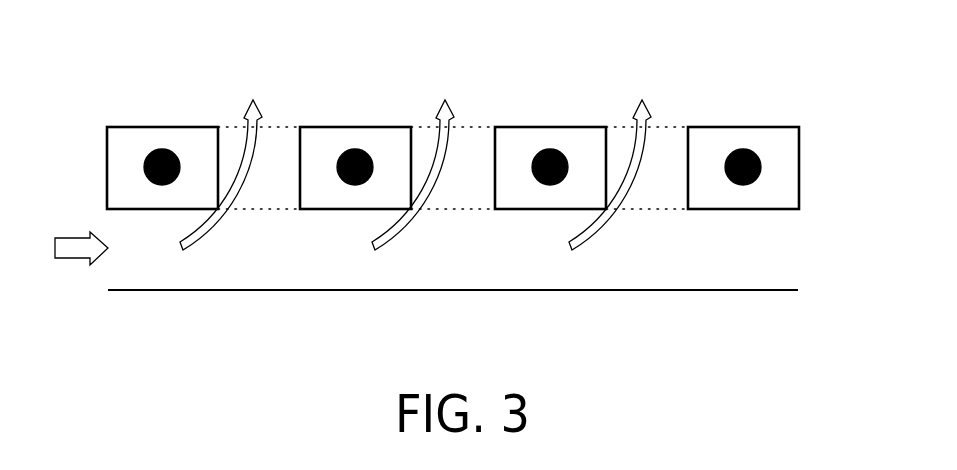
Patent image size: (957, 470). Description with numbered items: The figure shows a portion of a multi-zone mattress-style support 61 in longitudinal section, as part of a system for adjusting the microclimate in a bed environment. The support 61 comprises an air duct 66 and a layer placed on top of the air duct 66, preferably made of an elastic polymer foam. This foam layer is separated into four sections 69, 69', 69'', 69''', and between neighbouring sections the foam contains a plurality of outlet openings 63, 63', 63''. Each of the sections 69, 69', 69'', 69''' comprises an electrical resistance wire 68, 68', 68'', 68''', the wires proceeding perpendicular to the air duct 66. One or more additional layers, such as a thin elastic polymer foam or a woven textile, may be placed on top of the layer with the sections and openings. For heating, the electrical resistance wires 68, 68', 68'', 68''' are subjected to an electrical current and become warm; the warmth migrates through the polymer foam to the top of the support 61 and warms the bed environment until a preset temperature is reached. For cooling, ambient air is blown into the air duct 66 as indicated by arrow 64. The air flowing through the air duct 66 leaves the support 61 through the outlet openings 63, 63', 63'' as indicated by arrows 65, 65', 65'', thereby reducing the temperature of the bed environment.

The multi-zone mattress-style support 61 is at (799, 162).
The outlet opening 63 is at (251, 130).
The outlet opening 63' is at (443, 130).
The outlet opening 63'' is at (635, 130).
The arrow 64 is at (75, 258).
The arrow 65 is at (227, 137).
The arrow 65' is at (421, 137).
The arrow 65'' is at (618, 137).
The air duct 66 is at (248, 280).
The electrical resistance wire 68 is at (163, 118).
The electrical resistance wire 68' is at (359, 118).
The electrical resistance wire 68'' is at (553, 118).
The electrical resistance wire 68''' is at (745, 118).
The section 69 is at (158, 130).
The section 69' is at (349, 130).
The section 69'' is at (544, 130).
The section 69''' is at (734, 130).